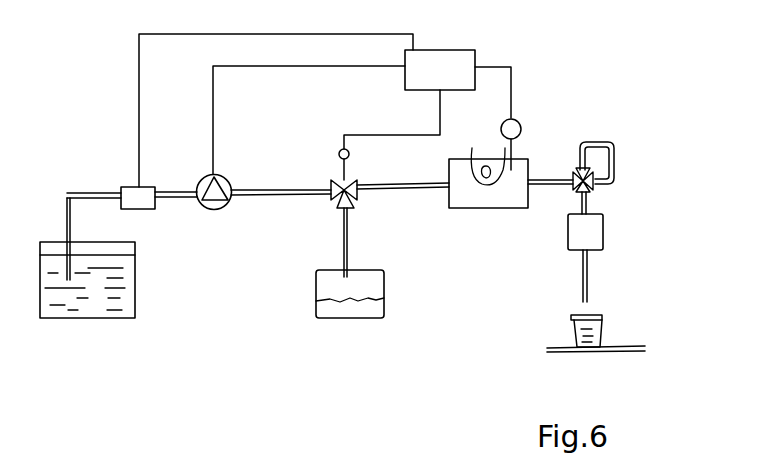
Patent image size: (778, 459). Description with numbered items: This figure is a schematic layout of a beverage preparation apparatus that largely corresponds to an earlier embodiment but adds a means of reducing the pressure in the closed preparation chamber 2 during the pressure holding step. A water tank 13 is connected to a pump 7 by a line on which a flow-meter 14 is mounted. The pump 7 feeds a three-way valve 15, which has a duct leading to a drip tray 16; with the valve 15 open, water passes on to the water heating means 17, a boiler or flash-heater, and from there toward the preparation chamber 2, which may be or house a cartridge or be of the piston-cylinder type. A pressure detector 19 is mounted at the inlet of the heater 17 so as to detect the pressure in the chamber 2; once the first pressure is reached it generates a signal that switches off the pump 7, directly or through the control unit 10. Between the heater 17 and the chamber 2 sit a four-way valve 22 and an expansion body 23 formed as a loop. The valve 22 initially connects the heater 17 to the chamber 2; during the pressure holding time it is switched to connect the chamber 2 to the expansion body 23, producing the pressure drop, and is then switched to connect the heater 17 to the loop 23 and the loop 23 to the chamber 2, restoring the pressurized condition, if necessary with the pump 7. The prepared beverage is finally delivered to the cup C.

The preparation chamber 2 is at (597, 233).
The pump 7 is at (202, 178).
The control unit 10 is at (443, 62).
The water tank 13 is at (100, 302).
The flow-meter 14 is at (142, 202).
The three-way valve 15 is at (330, 201).
The drip tray 16 is at (347, 312).
The water heating means 17 is at (473, 193).
The pressure detector 19 is at (522, 127).
The valve 22 is at (578, 188).
The expansion body 23 is at (618, 153).
The cup C is at (600, 328).